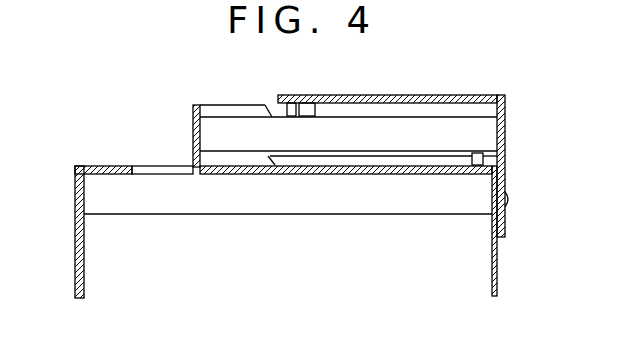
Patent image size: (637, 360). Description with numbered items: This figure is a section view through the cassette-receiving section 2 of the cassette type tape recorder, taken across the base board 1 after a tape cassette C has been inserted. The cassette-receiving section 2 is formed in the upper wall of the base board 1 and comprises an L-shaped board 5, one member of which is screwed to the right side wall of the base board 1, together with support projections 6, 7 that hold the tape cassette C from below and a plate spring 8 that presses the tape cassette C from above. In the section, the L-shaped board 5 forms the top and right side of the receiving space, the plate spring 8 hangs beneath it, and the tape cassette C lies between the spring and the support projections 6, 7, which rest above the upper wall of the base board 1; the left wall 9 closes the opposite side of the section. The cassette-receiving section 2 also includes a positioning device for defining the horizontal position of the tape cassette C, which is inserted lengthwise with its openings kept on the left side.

The base board 1 is at (497, 272).
The cassette-receiving section 2 is at (470, 95).
The L-shaped board 5 is at (395, 95).
The support projection 6 is at (256, 165).
The support projection 7 is at (475, 153).
The plate spring 8 is at (298, 103).
The side wall 9 is at (193, 139).
The tape cassette C is at (357, 157).